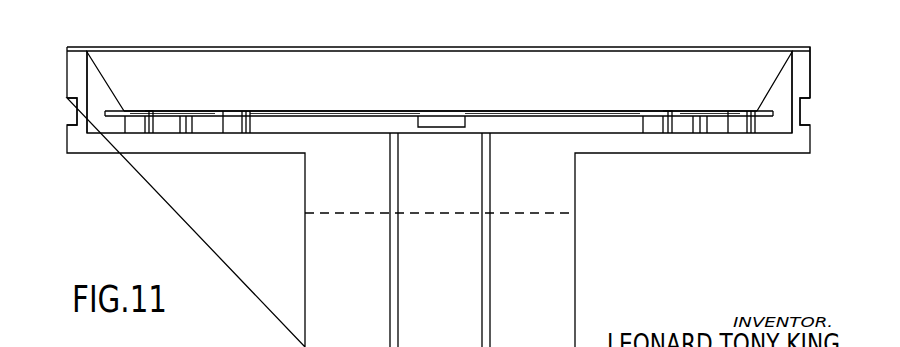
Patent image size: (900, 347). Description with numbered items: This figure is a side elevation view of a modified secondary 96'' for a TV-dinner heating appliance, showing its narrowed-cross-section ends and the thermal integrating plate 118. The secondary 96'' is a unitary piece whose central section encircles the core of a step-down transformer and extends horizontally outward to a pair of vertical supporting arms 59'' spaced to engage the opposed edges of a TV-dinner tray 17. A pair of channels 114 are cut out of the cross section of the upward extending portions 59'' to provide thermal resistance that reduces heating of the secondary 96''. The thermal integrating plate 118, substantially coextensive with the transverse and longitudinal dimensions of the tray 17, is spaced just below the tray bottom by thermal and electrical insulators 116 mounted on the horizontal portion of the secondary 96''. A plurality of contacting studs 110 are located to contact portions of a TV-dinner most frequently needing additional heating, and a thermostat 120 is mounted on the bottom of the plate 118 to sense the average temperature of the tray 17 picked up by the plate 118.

The TV-dinner tray 17 is at (600, 63).
The vertical supporting arms 59'' is at (436, 88).
The channels 114 is at (73, 113).
The secondary 96'' is at (438, 197).
The thermal integrating plate 118 is at (525, 117).
The thermostat 120 is at (441, 128).
The contacting studs 110 is at (134, 126).
The thermal and electrical insulators 116 is at (187, 126).